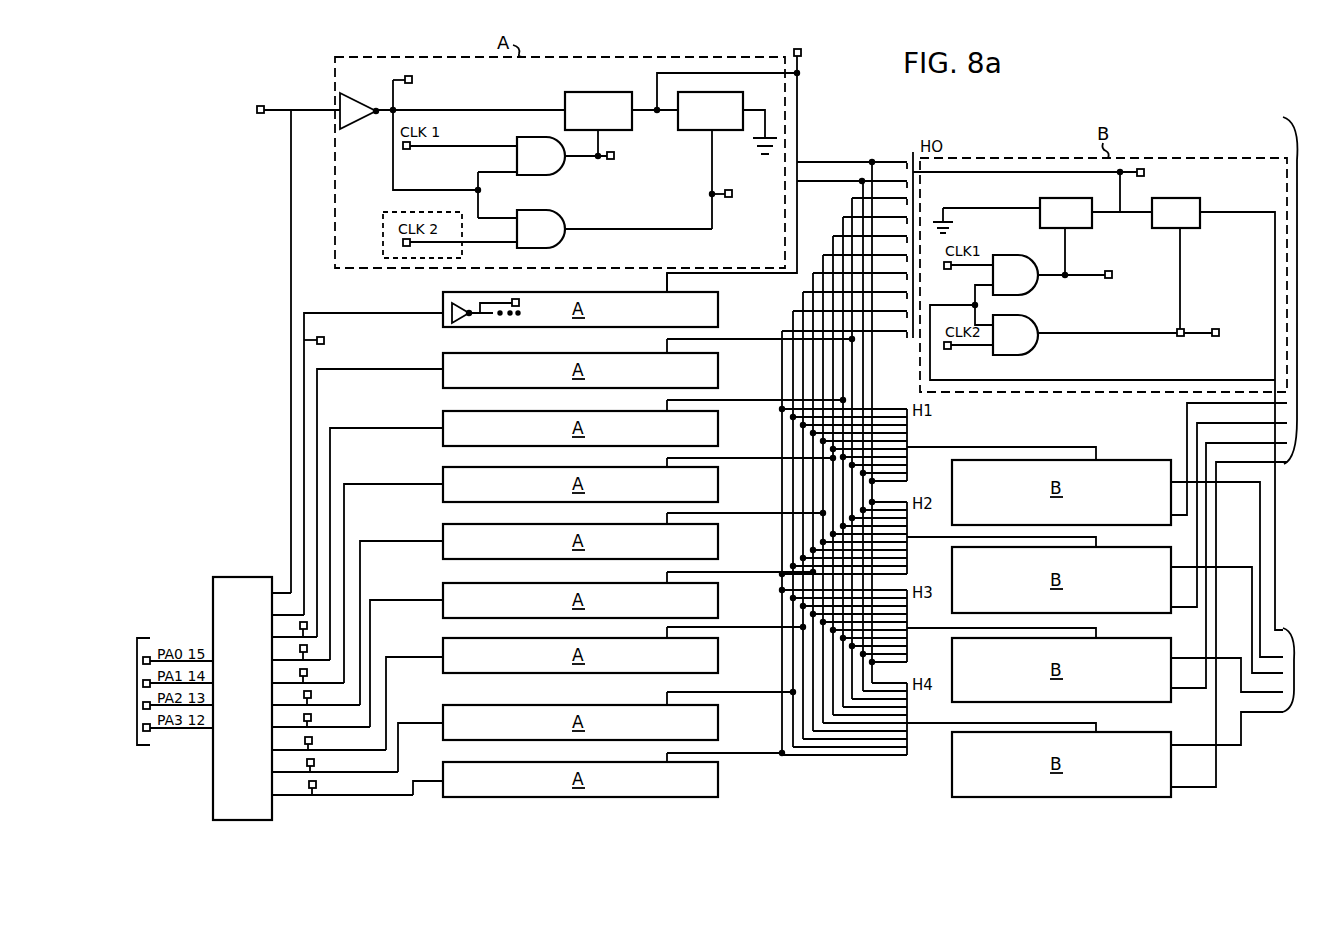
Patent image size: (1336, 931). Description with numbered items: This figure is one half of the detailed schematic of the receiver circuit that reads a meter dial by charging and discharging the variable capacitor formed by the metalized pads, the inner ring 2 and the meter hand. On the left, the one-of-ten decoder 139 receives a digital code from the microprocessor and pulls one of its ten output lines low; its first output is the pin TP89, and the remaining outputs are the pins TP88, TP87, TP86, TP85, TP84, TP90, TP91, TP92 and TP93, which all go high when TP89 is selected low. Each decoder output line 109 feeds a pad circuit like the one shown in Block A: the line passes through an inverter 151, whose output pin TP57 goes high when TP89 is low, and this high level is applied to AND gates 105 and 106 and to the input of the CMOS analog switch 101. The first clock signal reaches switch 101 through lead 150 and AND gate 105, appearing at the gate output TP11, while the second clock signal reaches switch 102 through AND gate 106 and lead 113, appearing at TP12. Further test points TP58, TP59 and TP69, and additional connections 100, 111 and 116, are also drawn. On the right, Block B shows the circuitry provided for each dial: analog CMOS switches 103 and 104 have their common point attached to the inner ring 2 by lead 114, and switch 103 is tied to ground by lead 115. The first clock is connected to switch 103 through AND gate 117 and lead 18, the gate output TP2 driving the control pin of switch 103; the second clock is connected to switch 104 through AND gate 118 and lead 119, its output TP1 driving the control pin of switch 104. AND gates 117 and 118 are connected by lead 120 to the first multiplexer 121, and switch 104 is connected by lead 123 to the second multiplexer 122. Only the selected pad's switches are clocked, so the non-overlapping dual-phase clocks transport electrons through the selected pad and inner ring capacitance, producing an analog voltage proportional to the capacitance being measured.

The inner ring 2 is at (911, 148).
The lead 18 is at (1068, 248).
The input line 100 is at (463, 110).
The switch 101 is at (611, 119).
The switch 102 is at (723, 119).
The analog CMOS switch 103 is at (1081, 222).
The analog CMOS switch 104 is at (1191, 222).
The AND gate 105 is at (554, 165).
The AND gate 106 is at (554, 238).
The output line 109 is at (314, 110).
The output line 111 is at (799, 110).
The lead 113 is at (712, 222).
The lead 114 is at (1045, 178).
The lead 115 is at (985, 206).
The line 116 is at (390, 161).
The AND gate 117 is at (1029, 284).
The AND gate 118 is at (1029, 344).
The lead 119 is at (1182, 280).
The lead 120 is at (1111, 381).
The first multiplexer 121 is at (1226, 282).
The second multiplexer 122 is at (1296, 656).
The lead 123 is at (1272, 320).
The decoder 139 is at (243, 660).
The lead 150 is at (586, 161).
The inverter 151 is at (364, 96).
The output pin Y0 of the decoder TP89 is at (236, 111).
The output pin of inverter TP57 is at (422, 81).
The output of AND gate 105 TP11 is at (631, 156).
The output of AND gate 106 TP12 is at (741, 195).
The test point TP59 is at (817, 51).
The test point TP58 is at (535, 300).
The output pin Y1 of the decoder TP88 is at (334, 341).
The output pin Y2 of the decoder TP87 is at (307, 625).
The output pin Y3 of the decoder TP86 is at (307, 649).
The output pin Y4 of the decoder TP85 is at (307, 673).
The output pin Y5 of the decoder TP84 is at (311, 695).
The output pin Y6 of the decoder TP90 is at (311, 718).
The output pin Y7 of the decoder TP91 is at (312, 741).
The output pin Y8 of the decoder TP92 is at (314, 763).
The output pin Y9 of the decoder TP93 is at (316, 785).
The test point TP69 is at (1160, 173).
The output of AND gate 117 TP2 is at (1124, 276).
The output of AND gate 118 TP1 is at (1213, 343).